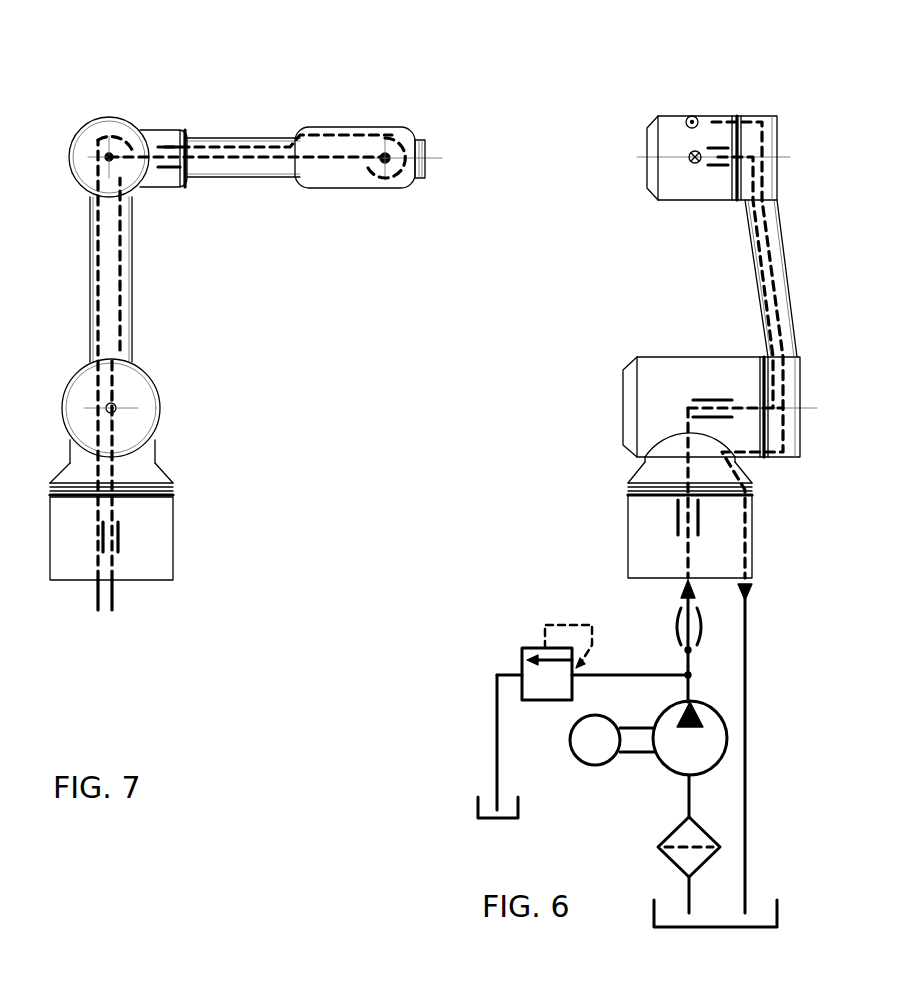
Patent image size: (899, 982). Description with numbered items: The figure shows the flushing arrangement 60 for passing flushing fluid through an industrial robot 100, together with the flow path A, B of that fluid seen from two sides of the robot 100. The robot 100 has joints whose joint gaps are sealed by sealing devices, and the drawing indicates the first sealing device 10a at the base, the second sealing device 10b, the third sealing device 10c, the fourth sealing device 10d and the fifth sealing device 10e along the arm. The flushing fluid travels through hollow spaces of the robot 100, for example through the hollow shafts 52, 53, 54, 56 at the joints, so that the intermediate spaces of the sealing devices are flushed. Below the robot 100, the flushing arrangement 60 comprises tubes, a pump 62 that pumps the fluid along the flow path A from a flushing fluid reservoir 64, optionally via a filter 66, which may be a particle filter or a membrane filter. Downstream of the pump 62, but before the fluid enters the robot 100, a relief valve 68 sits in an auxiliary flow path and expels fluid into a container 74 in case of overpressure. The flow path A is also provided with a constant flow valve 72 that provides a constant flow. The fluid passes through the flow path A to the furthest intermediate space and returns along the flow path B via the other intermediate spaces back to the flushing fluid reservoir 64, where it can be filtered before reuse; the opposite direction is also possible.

In FIG. 7, the industrial robot 100 is at (335, 190).
In FIG. 6, the industrial robot 100 is at (660, 200).
In FIG. 7, the first sealing device 10a is at (170, 484).
In FIG. 6, the first sealing device 10a is at (752, 490).
In FIG. 6, the second sealing device 10b is at (765, 356).
In FIG. 6, the third sealing device 10c is at (740, 118).
In FIG. 7, the fourth sealing device 10d is at (190, 176).
In FIG. 7, the fifth sealing device 10e is at (425, 176).
In FIG. 6, the hollow shaft 52 is at (718, 146).
In FIG. 7, the hollow shaft 53 is at (180, 146).
In FIG. 6, the hollow shaft 54 is at (705, 398).
In FIG. 7, the hollow shaft 56 is at (122, 532).
In FIG. 6, the hollow shaft 56 is at (678, 520).
In FIG. 6, the flushing arrangement 60 is at (795, 605).
In FIG. 6, the pump 62 is at (655, 765).
In FIG. 6, the flushing fluid reservoir 64 is at (780, 900).
In FIG. 6, the filter 66 is at (660, 835).
In FIG. 6, the relief valve 68 is at (522, 662).
In FIG. 6, the constant flow valve 72 is at (678, 628).
In FIG. 6, the container 74 is at (478, 800).
In FIG. 7, the flow path A is at (98, 606).
In FIG. 6, the flow path A is at (688, 663).
In FIG. 7, the flow path B is at (118, 606).
In FIG. 6, the flow path B is at (748, 650).